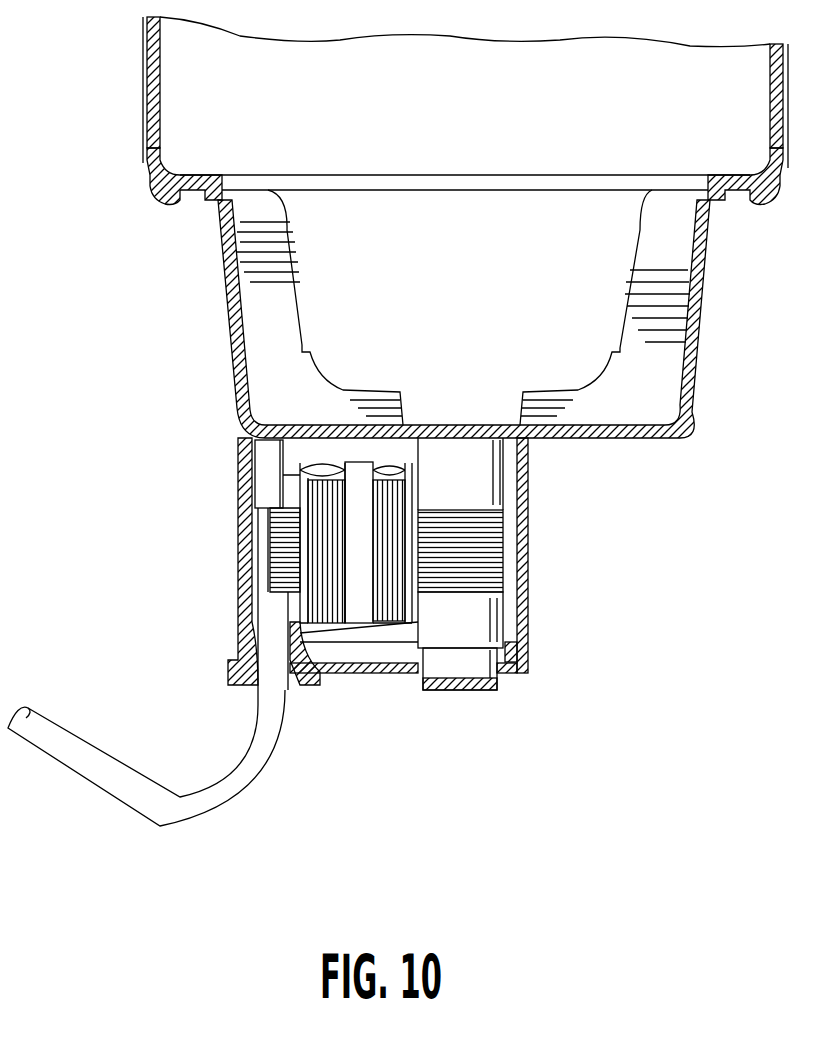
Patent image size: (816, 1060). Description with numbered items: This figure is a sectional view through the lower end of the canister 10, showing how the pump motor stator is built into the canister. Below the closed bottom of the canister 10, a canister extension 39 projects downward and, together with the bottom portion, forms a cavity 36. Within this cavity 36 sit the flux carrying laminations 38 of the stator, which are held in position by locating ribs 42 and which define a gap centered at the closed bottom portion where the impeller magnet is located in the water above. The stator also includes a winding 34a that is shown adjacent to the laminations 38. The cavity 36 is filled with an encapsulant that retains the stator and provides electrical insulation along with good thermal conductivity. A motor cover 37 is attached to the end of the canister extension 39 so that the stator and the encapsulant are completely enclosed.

The canister 10 is at (156, 137).
The locating ribs 42 is at (268, 470).
The canister extension 39 is at (247, 562).
The flux carrying laminations 38 is at (473, 507).
The cavity 36 is at (350, 633).
The winding 34a is at (383, 622).
The motor cover 37 is at (482, 690).